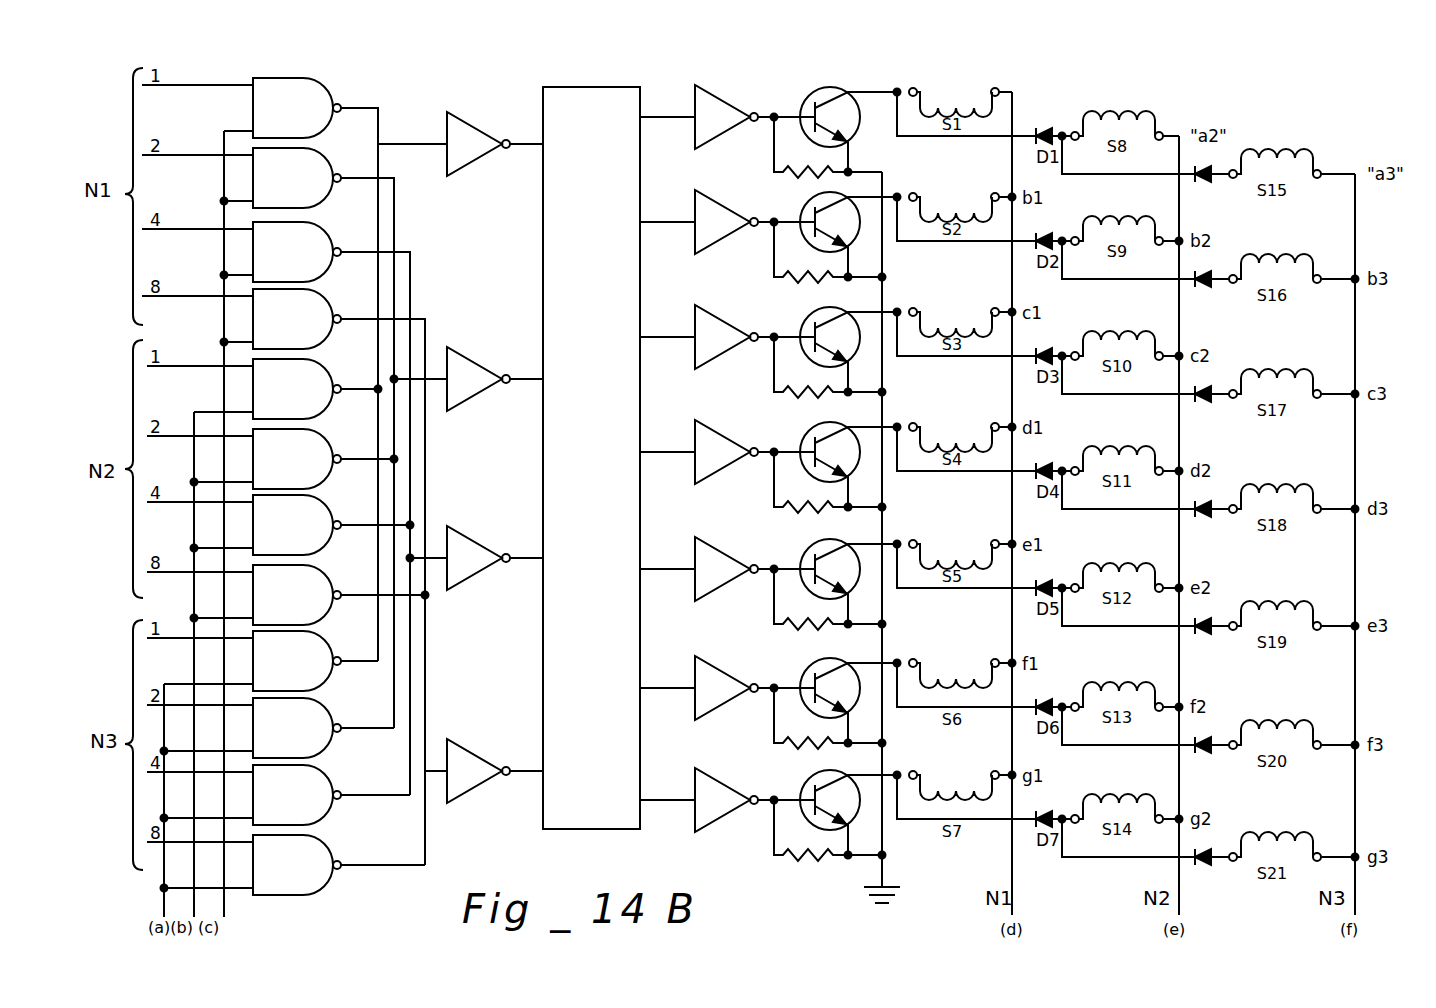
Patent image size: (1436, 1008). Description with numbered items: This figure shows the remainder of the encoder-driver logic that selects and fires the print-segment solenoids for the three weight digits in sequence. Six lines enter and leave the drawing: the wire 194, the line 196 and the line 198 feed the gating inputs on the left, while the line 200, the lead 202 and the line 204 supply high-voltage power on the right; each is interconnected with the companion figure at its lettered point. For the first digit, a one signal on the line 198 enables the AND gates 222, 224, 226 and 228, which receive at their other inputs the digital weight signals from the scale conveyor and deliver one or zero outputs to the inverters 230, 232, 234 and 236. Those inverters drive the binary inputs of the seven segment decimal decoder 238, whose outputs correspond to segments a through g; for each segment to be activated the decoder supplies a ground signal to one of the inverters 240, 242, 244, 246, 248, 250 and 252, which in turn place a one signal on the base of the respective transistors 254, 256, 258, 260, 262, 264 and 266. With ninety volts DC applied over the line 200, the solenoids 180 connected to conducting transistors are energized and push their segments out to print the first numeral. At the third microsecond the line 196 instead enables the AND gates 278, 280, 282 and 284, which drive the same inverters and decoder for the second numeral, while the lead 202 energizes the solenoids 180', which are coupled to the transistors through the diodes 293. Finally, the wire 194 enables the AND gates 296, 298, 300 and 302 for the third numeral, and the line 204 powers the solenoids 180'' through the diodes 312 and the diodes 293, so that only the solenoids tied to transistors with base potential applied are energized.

The wire 194 is at (161, 900).
The line 196 is at (196, 898).
The line 198 is at (227, 905).
The line 200 is at (1013, 878).
The lead 202 is at (1180, 878).
The line 204 is at (1356, 876).
The AND gate 222 is at (308, 83).
The AND gate 224 is at (308, 167).
The AND gate 226 is at (308, 237).
The AND gate 228 is at (308, 308).
The inverter 230 is at (458, 122).
The inverter 232 is at (458, 355).
The inverter 234 is at (460, 538).
The inverter 236 is at (451, 743).
The seven segment decimal decoder 238 is at (589, 90).
The inverter 240 is at (707, 109).
The inverter 242 is at (707, 214).
The inverter 244 is at (707, 329).
The inverter 246 is at (707, 444).
The inverter 248 is at (707, 561).
The inverter 250 is at (707, 680).
The inverter 252 is at (707, 792).
The transistor 254 is at (828, 91).
The transistor 256 is at (818, 206).
The transistor 258 is at (818, 321).
The transistor 260 is at (818, 436).
The transistor 262 is at (818, 553).
The transistor 264 is at (818, 672).
The transistor 266 is at (818, 784).
The AND gate 278 is at (308, 373).
The AND gate 280 is at (308, 443).
The AND gate 282 is at (308, 512).
The AND gate 284 is at (308, 580).
The diode 293 is at (1042, 119).
The AND gate 296 is at (303, 648).
The AND gate 298 is at (303, 713).
The AND gate 300 is at (303, 788).
The AND gate 302 is at (303, 855).
The diode 312 is at (1211, 154).
The solenoid 180 is at (954, 429).
The solenoid 180' is at (1117, 453).
The solenoid 180'' is at (1281, 488).